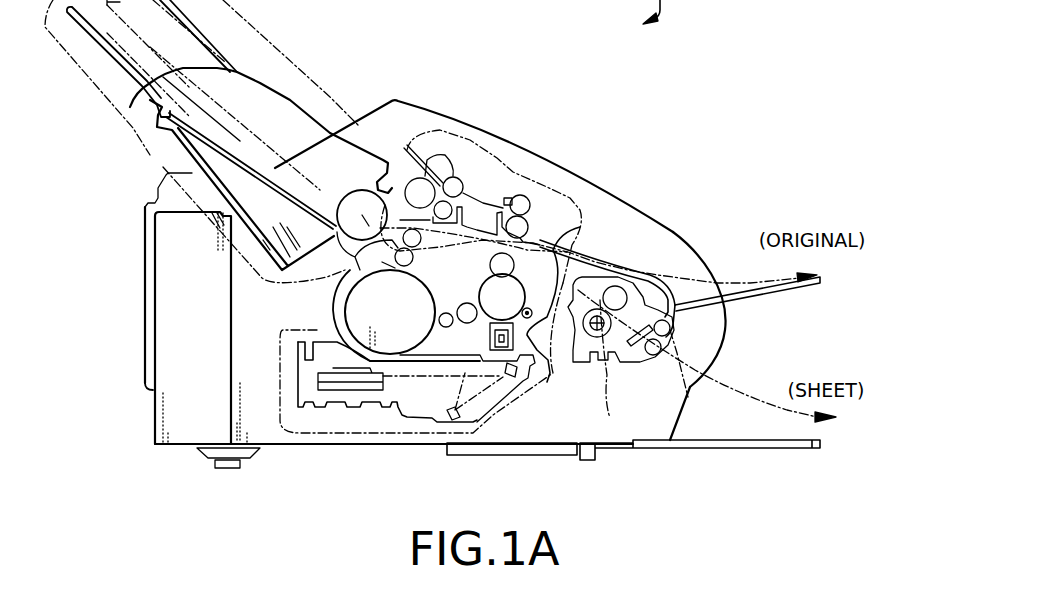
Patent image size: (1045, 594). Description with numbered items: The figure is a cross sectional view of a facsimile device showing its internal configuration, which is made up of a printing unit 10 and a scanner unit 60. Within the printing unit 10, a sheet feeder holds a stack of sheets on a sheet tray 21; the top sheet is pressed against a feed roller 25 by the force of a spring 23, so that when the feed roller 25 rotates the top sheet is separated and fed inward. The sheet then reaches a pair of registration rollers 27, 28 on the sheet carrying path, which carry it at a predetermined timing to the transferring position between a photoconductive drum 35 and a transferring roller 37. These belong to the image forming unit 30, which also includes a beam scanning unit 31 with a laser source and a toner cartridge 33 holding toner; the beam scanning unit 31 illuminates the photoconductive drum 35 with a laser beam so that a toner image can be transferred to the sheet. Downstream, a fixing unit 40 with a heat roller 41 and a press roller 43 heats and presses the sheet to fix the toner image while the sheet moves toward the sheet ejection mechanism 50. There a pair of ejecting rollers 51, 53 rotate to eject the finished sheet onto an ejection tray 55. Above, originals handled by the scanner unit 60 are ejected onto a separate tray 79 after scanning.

The printing unit 10 is at (536, 420).
The sheet tray 21 is at (185, 138).
The spring 23 is at (277, 240).
The feed roller 25 is at (361, 213).
The registration roller 27 is at (390, 312).
The registration roller 28 is at (416, 263).
The image forming unit 30 is at (327, 440).
The beam scanning unit 31 is at (407, 412).
The toner cartridge 33 is at (357, 310).
The photoconductive drum 35 is at (528, 330).
The transferring roller 37 is at (553, 252).
The fixing unit 40 is at (604, 395).
The heat roller 41 is at (638, 362).
The press roller 43 is at (617, 293).
The sheet ejection mechanism 50 is at (688, 397).
The ejecting roller 51 is at (678, 345).
The ejecting roller 53 is at (670, 323).
The ejection tray 55 is at (758, 448).
The scanner unit 60 is at (470, 143).
The tray 79 is at (787, 293).